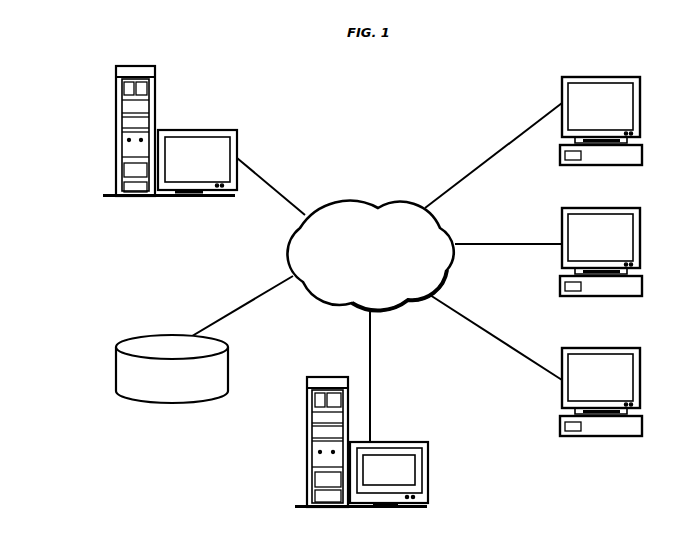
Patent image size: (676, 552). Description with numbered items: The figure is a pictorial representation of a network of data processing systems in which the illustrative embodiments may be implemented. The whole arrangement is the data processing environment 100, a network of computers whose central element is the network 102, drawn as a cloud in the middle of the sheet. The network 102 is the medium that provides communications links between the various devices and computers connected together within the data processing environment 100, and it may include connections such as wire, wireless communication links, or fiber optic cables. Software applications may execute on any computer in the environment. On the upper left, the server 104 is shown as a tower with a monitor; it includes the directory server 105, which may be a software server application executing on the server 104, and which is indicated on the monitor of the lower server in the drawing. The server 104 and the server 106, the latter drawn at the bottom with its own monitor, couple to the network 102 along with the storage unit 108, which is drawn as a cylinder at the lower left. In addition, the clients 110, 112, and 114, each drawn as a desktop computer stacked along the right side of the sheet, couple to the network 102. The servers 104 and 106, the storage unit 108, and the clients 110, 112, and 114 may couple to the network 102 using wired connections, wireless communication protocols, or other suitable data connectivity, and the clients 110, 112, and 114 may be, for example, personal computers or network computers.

The data processing environment 100 is at (78, 85).
The network 102 is at (384, 268).
The server 104 is at (213, 218).
The directory server 105 is at (416, 468).
The server 106 is at (403, 530).
The storage unit 108 is at (185, 400).
The client 110 is at (641, 316).
The client 112 is at (641, 454).
The client 114 is at (641, 184).